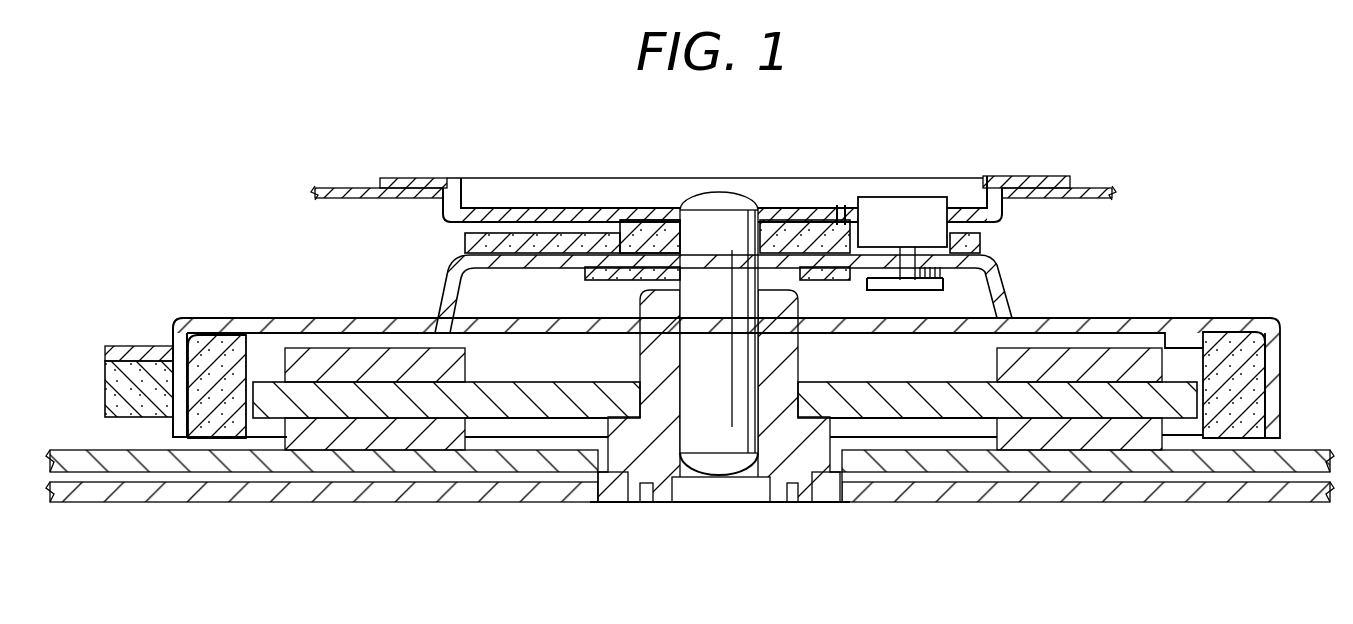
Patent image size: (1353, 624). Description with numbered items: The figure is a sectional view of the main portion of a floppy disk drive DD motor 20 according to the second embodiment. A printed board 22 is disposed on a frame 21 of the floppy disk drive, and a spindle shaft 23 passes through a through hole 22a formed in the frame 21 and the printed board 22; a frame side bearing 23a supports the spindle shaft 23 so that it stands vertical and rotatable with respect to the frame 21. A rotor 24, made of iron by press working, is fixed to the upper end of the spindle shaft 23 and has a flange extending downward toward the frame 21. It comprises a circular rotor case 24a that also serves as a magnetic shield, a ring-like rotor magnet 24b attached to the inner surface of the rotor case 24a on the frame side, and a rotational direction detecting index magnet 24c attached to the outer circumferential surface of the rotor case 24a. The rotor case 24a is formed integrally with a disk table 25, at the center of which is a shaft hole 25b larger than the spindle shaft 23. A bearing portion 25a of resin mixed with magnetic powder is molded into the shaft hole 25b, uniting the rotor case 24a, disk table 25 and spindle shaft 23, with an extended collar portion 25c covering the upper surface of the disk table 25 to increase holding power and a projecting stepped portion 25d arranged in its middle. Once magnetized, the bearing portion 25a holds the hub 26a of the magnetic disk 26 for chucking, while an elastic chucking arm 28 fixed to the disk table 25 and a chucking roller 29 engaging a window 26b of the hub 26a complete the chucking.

The floppy disk drive DD motor 20 is at (263, 211).
The frame 21 is at (1020, 503).
The printed board 22 is at (918, 472).
The through hole 22a is at (827, 472).
The spindle shaft 23 is at (713, 225).
The frame side bearing 23a is at (656, 460).
The rotor 24 is at (300, 318).
The rotor case 24a is at (186, 318).
The rotor magnet 24b is at (222, 405).
The rotational direction detecting index magnet 24c is at (137, 400).
The disk table 25 is at (450, 276).
The bearing portion 25a is at (790, 233).
The shaft hole 25b is at (665, 215).
The extended collar portion 25c is at (530, 233).
The projecting stepped portion 25d is at (633, 238).
The magnetic disk 26 is at (1090, 188).
The hub 26a is at (453, 205).
The window 26b is at (841, 208).
The chucking arm 28 is at (1003, 268).
The chucking roller 29 is at (905, 215).